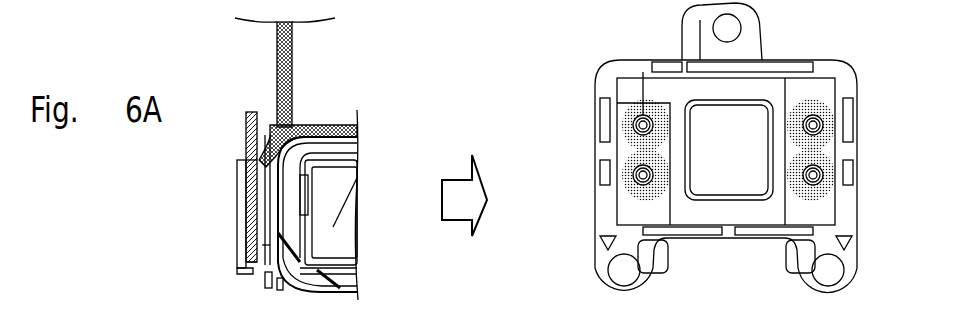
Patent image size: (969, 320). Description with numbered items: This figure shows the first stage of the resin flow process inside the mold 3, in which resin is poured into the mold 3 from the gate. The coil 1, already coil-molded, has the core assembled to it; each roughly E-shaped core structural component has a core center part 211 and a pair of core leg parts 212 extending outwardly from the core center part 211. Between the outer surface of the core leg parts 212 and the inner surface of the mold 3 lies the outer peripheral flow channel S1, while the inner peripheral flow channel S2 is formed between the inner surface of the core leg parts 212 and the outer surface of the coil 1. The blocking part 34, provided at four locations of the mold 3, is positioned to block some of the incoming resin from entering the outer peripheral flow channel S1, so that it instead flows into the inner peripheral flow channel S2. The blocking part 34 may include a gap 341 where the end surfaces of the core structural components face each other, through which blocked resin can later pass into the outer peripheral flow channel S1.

The coil 1 is at (340, 286).
The mold 3 is at (345, 101).
The blocking part 34 is at (250, 112).
The gap 341 is at (605, 155).
The core center part 211 is at (333, 248).
The core leg part 212 is at (270, 250).
The outer peripheral flow channel S1 is at (240, 213).
The inner peripheral flow channel S2 is at (250, 247).